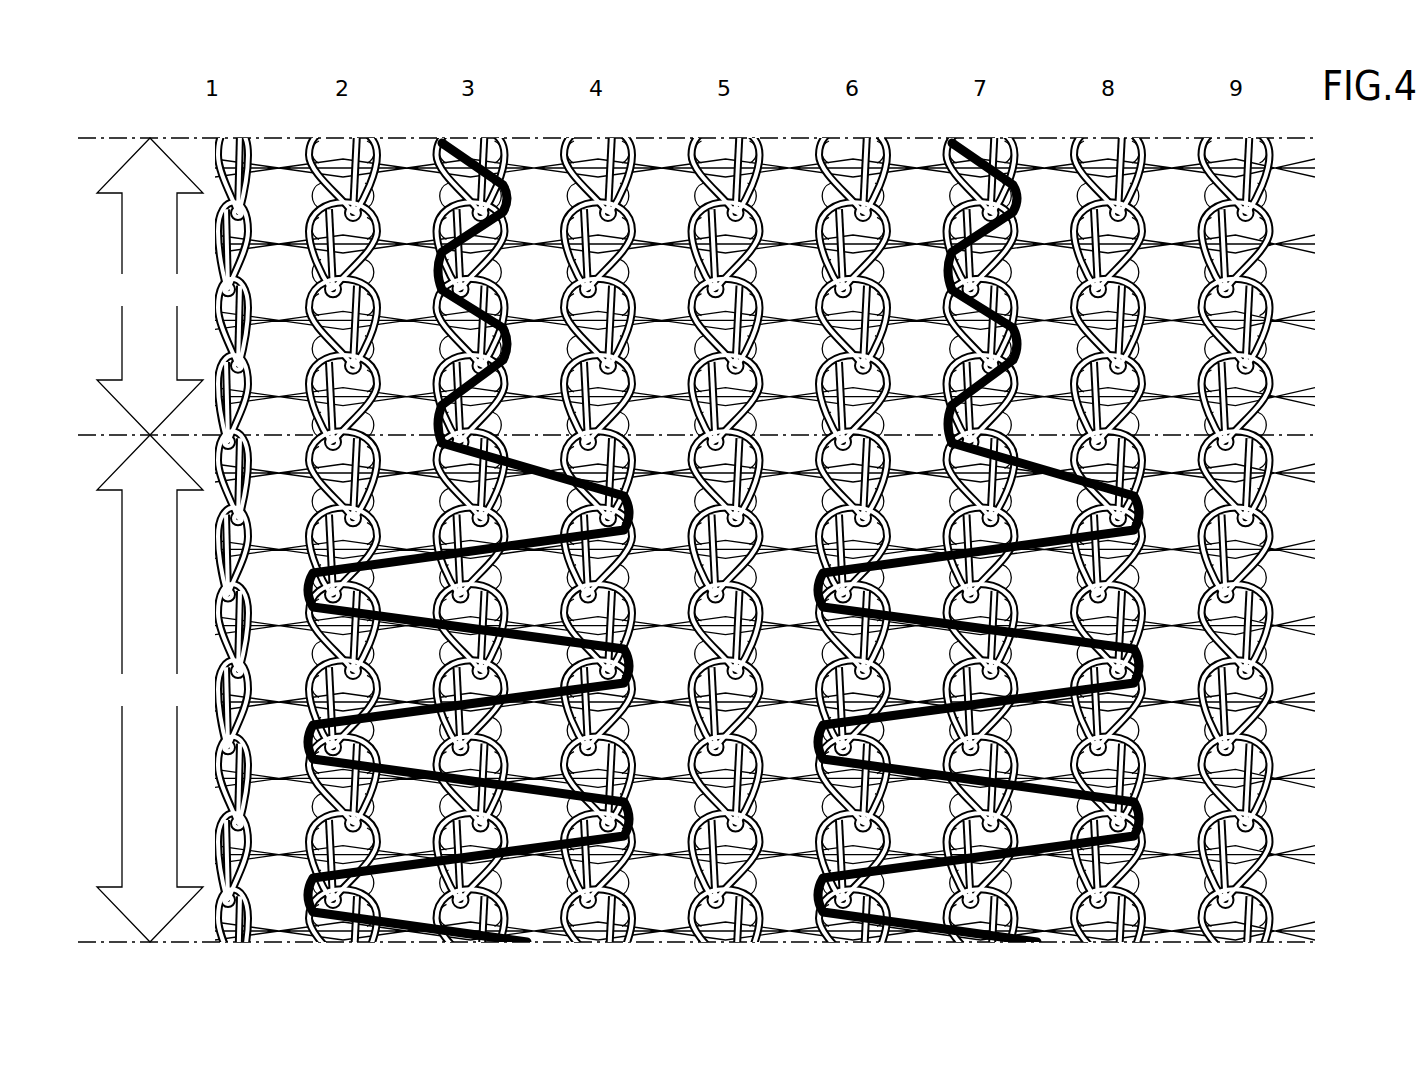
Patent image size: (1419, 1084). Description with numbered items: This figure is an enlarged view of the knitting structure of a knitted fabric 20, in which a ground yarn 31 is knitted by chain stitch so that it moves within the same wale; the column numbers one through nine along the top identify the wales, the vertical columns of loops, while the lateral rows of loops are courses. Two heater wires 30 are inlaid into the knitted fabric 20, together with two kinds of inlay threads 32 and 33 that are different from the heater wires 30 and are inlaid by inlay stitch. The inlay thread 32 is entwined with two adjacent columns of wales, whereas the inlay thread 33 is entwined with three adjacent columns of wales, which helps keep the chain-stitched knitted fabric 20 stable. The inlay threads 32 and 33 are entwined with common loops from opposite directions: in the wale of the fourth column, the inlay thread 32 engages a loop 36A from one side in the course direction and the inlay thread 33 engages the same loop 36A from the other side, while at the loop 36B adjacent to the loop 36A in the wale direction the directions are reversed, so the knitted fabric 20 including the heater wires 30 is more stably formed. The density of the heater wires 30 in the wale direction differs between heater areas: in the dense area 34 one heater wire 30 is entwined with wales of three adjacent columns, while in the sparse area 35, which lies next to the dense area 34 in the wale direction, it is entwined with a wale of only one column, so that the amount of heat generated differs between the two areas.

The knitted fabric 20 is at (96, 116).
The heater wire 30 is at (505, 192).
The ground yarn 31 is at (548, 222).
The inlay thread 32 is at (565, 362).
The inlay thread 33 is at (632, 362).
The dense area 34 is at (122, 663).
The sparse area 35 is at (122, 262).
The loop 36A is at (638, 216).
The loop 36B is at (633, 291).